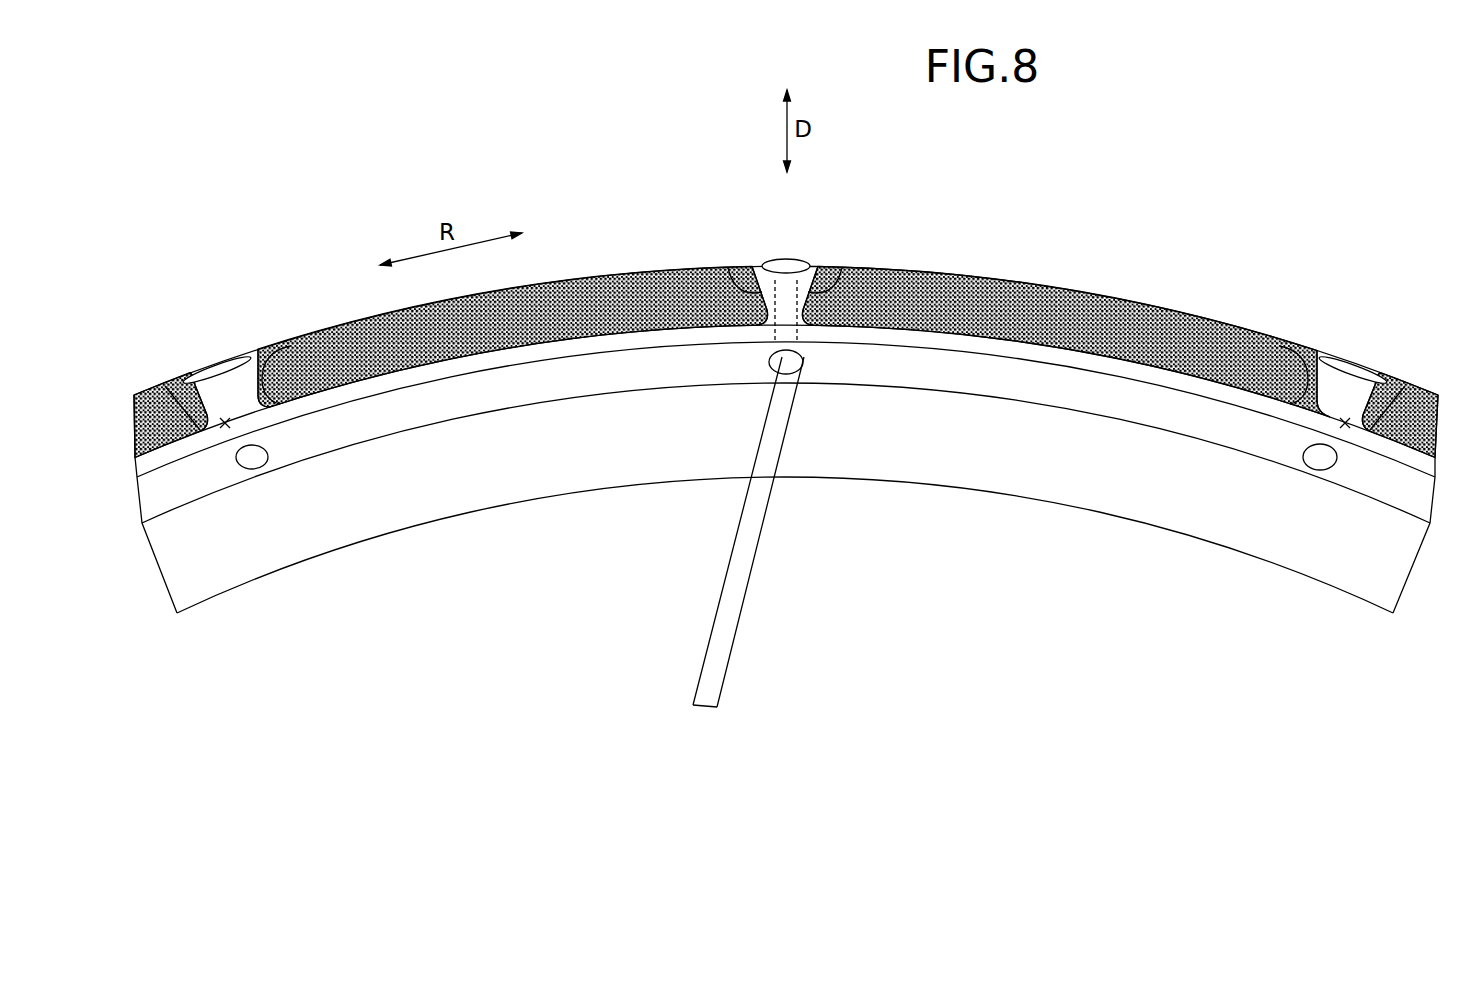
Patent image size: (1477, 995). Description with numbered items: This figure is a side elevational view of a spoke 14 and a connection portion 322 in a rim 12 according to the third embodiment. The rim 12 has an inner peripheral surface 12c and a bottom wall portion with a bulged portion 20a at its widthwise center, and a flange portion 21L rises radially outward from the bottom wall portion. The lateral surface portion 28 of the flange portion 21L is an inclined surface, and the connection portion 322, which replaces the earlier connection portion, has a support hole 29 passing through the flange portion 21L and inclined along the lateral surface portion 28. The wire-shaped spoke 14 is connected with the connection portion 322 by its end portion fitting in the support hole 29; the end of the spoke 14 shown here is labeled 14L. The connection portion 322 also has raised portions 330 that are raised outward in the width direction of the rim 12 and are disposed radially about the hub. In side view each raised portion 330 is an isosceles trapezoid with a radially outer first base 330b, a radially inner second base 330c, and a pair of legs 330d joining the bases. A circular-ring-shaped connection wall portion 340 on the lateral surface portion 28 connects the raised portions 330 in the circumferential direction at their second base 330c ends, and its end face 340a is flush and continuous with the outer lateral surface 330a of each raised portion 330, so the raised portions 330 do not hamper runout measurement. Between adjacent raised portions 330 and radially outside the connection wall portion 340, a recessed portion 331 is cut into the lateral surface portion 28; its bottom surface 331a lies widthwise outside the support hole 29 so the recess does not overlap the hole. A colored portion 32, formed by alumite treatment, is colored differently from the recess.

The rim 12 is at (1163, 303).
The inner peripheral surface 12c is at (1025, 495).
The spoke 14 is at (737, 636).
The pin lower end 14L is at (717, 676).
The bulged portion 20a is at (968, 487).
The flange portion 21L is at (1097, 310).
The lateral surface portion 28 is at (605, 300).
The support hole 29 is at (790, 378).
The colored portion 32 is at (797, 318).
The connection portion 322 is at (760, 262).
The raised portion 330 is at (753, 287).
The outer lateral surface 330a is at (785, 327).
The first base 330b is at (813, 285).
The second base 330c is at (780, 375).
The legs 330d is at (720, 290).
The recessed portion 331 is at (575, 300).
The bottom surface 331a is at (375, 350).
The connection wall portion 340 is at (547, 337).
The end face 340a is at (528, 350).